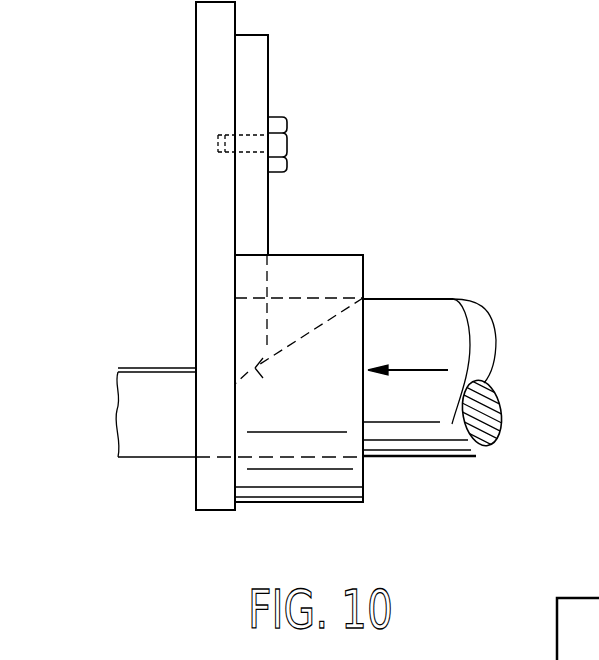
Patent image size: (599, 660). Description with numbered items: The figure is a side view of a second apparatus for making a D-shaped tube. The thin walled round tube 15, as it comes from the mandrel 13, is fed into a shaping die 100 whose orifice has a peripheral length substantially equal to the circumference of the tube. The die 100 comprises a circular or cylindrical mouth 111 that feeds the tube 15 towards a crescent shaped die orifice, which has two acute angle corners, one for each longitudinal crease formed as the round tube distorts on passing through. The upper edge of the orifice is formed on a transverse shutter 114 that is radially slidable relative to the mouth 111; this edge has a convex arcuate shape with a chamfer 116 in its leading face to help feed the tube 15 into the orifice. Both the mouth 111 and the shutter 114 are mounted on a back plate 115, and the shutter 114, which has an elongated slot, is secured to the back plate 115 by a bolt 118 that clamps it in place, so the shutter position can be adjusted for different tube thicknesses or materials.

The shaping die 100 is at (330, 241).
The cylindrical mouth 111 is at (345, 482).
The transverse shutter 114 is at (265, 79).
The back plate 115 is at (207, 242).
The chamfer 116 is at (264, 381).
The bolt 118 is at (282, 143).
The thin walled round tube 15 is at (432, 316).
The mandrel 13 is at (487, 446).